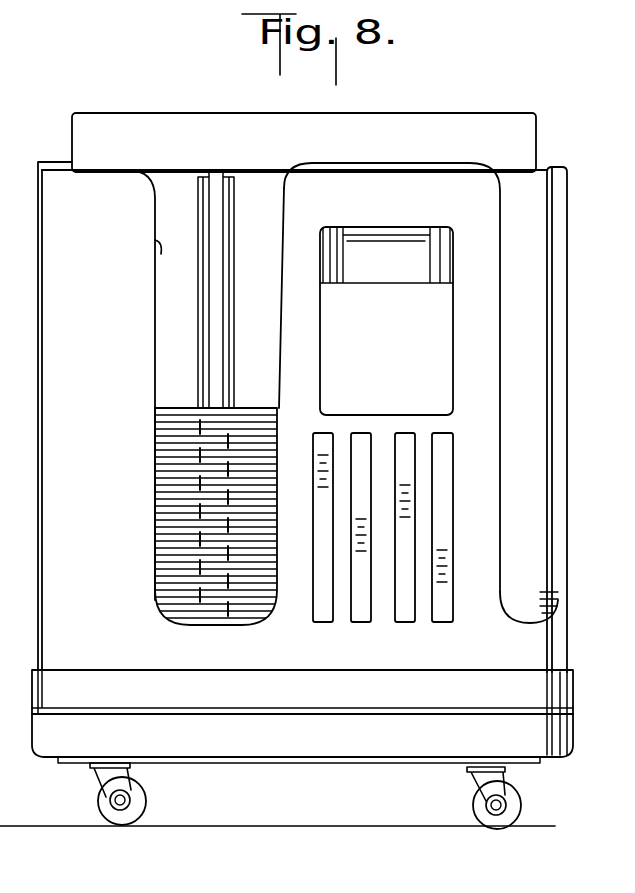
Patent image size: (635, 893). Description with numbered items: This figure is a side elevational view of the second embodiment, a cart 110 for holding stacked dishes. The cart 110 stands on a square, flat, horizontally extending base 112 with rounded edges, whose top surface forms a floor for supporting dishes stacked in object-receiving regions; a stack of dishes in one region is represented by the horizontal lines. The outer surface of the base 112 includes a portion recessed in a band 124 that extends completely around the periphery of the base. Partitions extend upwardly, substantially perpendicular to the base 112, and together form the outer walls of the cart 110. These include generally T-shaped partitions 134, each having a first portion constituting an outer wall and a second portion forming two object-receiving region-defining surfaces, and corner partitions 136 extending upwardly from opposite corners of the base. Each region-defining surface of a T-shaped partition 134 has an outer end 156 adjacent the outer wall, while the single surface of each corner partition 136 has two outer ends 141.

The cart 110 is at (587, 167).
The base 112 is at (584, 668).
The band 124 is at (575, 721).
The generally T-shaped partition 134 is at (412, 208).
The corner partition 136 is at (108, 356).
The outer end 141 is at (155, 253).
The outer end 156 is at (277, 243).